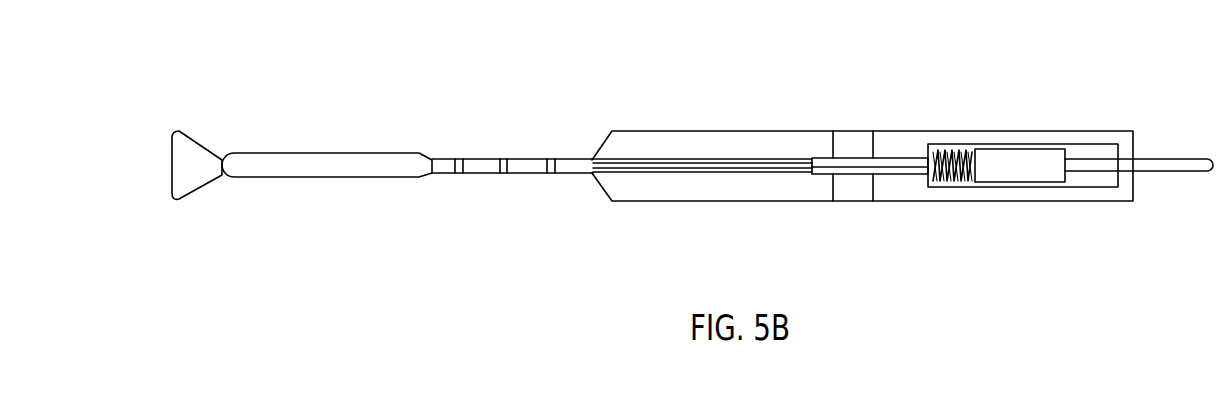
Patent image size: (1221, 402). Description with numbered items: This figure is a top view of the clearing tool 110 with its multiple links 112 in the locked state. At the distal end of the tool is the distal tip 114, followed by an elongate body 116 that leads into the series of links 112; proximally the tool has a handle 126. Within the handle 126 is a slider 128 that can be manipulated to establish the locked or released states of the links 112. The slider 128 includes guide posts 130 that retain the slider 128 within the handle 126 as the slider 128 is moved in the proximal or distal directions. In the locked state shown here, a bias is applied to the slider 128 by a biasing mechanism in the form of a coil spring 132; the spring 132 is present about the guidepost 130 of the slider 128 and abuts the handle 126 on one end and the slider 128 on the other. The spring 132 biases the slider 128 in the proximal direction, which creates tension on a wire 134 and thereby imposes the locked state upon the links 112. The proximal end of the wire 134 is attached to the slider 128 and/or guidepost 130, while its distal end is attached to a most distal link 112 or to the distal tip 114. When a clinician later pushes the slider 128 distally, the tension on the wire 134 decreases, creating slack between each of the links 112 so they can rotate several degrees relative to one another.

The clearing tool 110 is at (570, 53).
The links 112 is at (475, 177).
The distal tip 114 is at (192, 138).
The elongate body / handle portion 116 is at (286, 162).
The handle 126 is at (690, 192).
The slider 128 is at (1023, 168).
The guide posts 130 is at (847, 167).
The spring 132 is at (943, 187).
The wire 134 is at (697, 162).